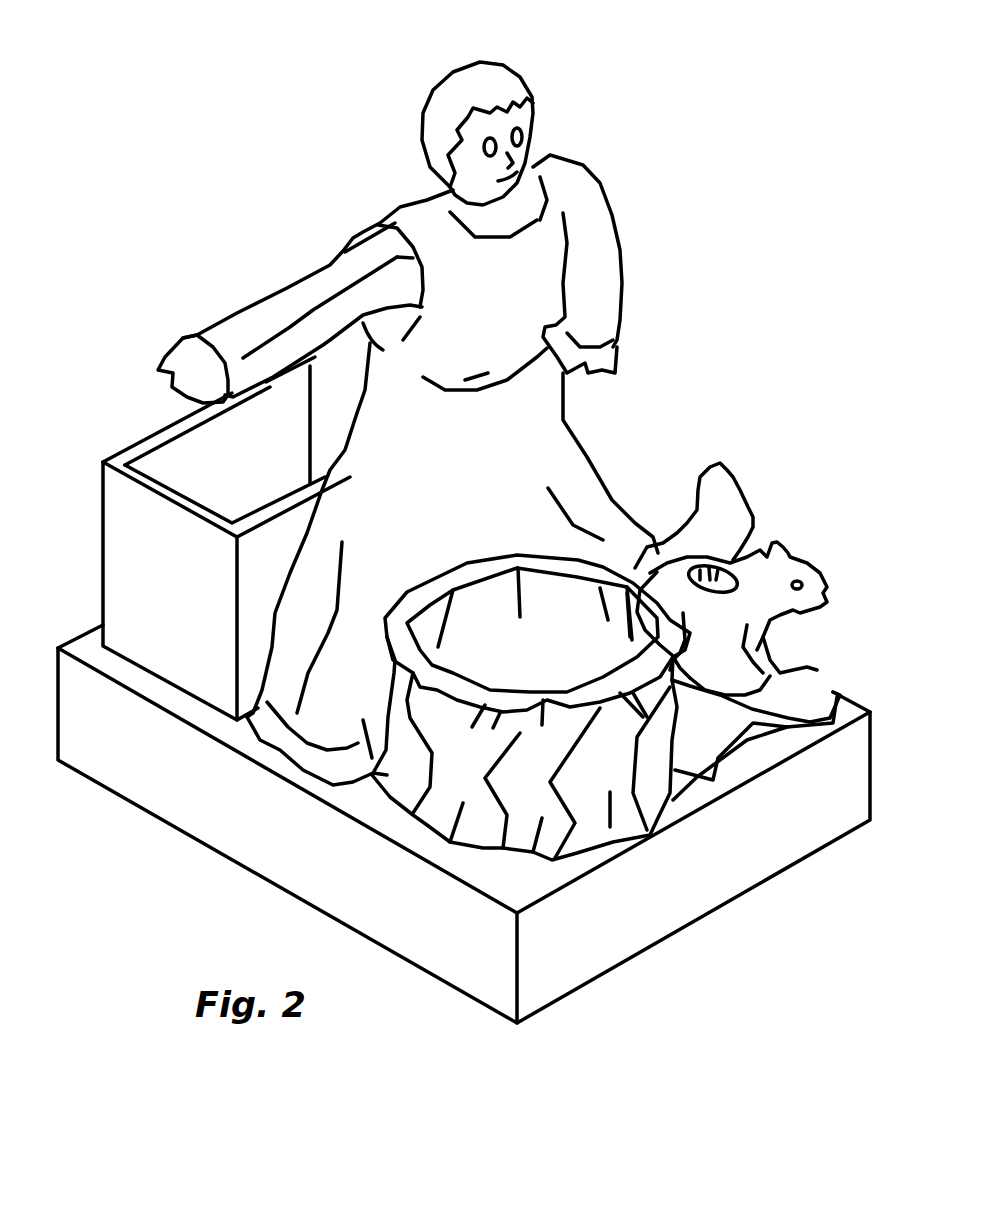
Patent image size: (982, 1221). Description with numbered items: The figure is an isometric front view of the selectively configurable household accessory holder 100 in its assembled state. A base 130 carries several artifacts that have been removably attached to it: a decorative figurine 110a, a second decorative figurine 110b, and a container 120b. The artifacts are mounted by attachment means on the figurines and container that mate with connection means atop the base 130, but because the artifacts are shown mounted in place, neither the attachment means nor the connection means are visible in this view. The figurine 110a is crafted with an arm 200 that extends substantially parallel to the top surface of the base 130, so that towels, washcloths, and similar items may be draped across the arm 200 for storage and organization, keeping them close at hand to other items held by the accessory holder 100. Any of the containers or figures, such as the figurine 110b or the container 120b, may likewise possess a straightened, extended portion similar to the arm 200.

The accessory holder 100 is at (337, 122).
The decorative figurine 110a is at (590, 198).
The decorative figurine 110b is at (752, 529).
The container 120b is at (142, 443).
The base 130 is at (653, 900).
The arm 200 is at (320, 292).